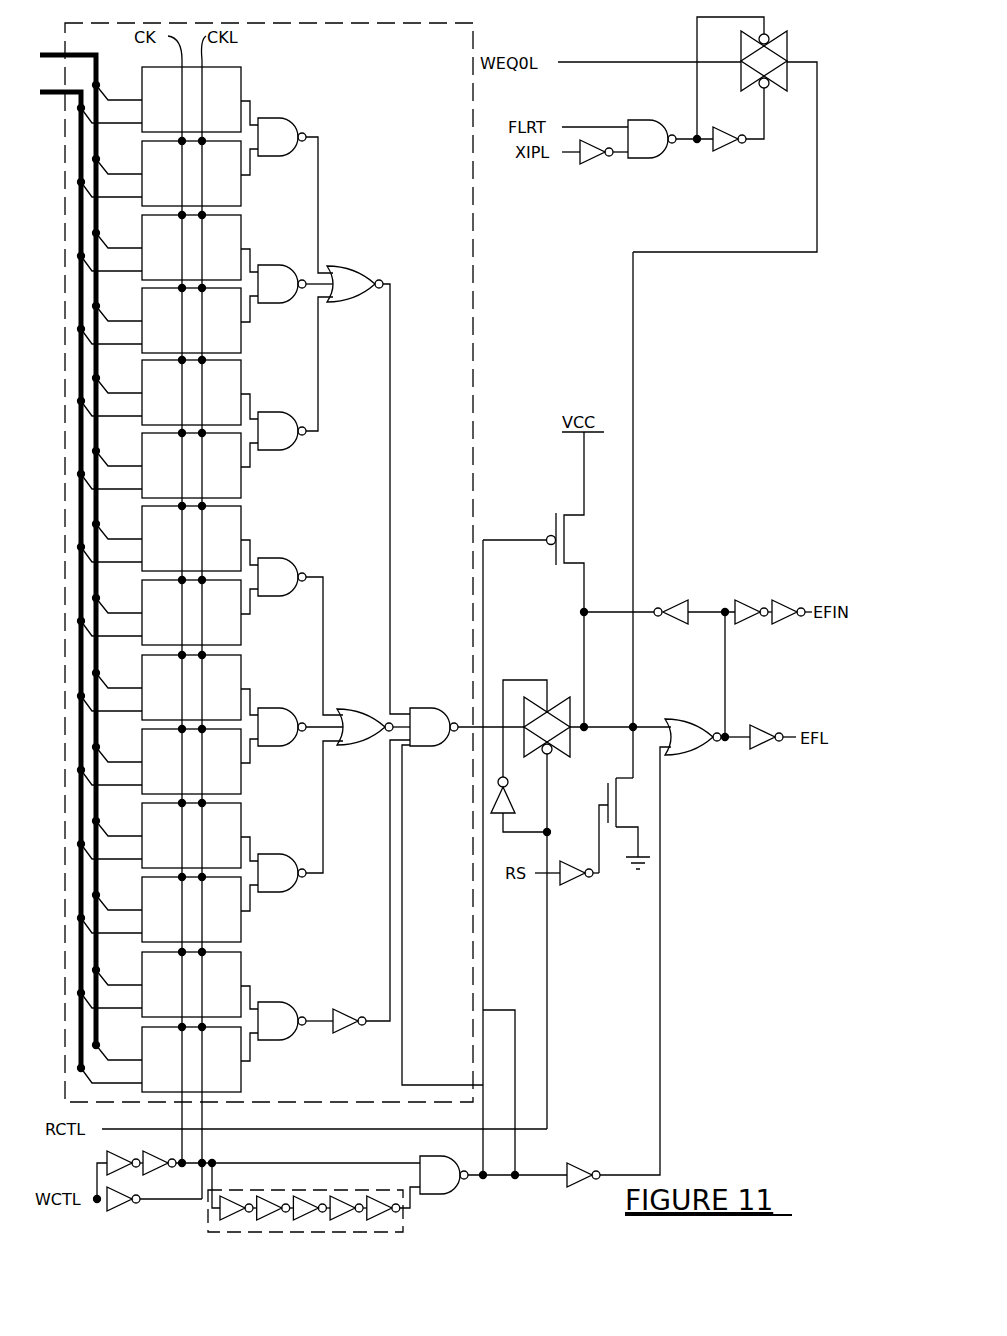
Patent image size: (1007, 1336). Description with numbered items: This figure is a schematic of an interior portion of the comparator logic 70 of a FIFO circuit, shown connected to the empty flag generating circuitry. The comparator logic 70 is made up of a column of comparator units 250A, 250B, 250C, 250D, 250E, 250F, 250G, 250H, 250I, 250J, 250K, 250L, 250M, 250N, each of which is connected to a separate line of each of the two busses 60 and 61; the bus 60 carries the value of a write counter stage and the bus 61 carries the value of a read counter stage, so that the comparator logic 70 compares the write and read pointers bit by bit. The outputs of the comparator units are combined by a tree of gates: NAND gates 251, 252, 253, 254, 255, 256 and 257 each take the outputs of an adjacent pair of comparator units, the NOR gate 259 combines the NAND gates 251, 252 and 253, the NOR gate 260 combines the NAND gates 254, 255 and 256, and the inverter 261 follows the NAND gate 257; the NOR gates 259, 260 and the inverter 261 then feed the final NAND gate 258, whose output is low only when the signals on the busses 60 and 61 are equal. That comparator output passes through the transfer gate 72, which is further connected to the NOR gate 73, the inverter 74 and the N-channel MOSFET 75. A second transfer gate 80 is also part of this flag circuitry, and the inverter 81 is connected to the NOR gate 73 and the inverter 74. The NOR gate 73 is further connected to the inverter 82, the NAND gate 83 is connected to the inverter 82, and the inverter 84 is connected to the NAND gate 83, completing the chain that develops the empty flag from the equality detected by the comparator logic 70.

The bus 60 is at (78, 52).
The bus 61 is at (78, 89).
The comparator logic 70 is at (473, 258).
The transfer gate 72 is at (553, 700).
The NOR gate 73 is at (707, 737).
The inverter 74 is at (676, 600).
The N-channel MOSFET 75 is at (606, 790).
The transfer gate 80 is at (786, 56).
The inverter 81 is at (772, 762).
The inverter 82 is at (586, 1184).
The NAND gate 83 is at (493, 1175).
The inverter 84 is at (388, 1232).
The comparator unit 250A is at (225, 80).
The comparator unit 250B is at (219, 200).
The comparator unit 250C is at (219, 236).
The comparator unit 250D is at (219, 347).
The comparator unit 250E is at (219, 381).
The comparator unit 250F is at (219, 492).
The comparator unit 250G is at (219, 527).
The comparator unit 250H is at (219, 639).
The comparator unit 250I is at (219, 676).
The comparator unit 250J is at (219, 788).
The comparator unit 250K is at (219, 824).
The comparator unit 250L is at (219, 936).
The comparator unit 250M is at (219, 973).
The comparator unit 250N is at (219, 1086).
The NAND gate 251 is at (295, 195).
The NAND gate 252 is at (295, 284).
The NAND gate 253 is at (295, 373).
The NAND gate 254 is at (300, 636).
The NAND gate 255 is at (300, 727).
The NAND gate 256 is at (300, 816).
The NAND gate 257 is at (295, 1021).
The NAND gate 258 is at (463, 896).
The NOR gate 259 is at (368, 284).
The NOR gate 260 is at (362, 712).
The inverter 261 is at (350, 1010).